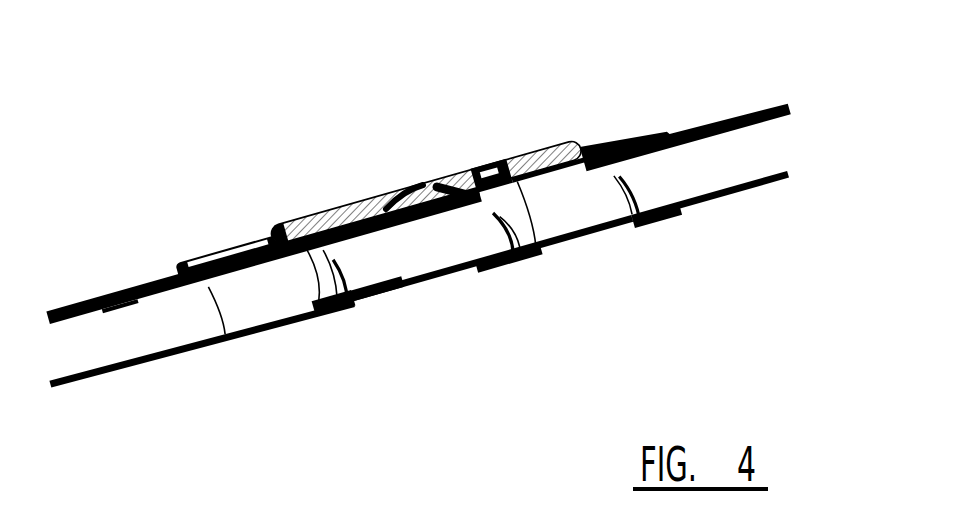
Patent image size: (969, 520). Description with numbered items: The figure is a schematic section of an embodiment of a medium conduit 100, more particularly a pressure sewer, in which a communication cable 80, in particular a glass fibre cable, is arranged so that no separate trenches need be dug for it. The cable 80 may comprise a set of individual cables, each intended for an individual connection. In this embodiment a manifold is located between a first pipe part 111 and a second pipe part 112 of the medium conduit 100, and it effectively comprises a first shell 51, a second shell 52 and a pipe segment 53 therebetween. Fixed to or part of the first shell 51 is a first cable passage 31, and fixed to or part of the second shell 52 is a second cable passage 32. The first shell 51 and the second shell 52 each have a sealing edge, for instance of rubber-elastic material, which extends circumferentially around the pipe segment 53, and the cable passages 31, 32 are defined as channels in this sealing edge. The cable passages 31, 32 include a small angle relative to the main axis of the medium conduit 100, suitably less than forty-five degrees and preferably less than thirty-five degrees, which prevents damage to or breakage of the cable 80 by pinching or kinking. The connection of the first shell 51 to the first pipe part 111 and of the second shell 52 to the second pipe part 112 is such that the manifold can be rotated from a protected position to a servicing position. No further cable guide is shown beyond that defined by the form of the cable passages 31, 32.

The medium conduit 100 is at (190, 114).
The first cable passage 31 is at (392, 202).
The second cable passage 32 is at (460, 177).
The first shell 51 is at (303, 320).
The second shell 52 is at (633, 223).
The pipe segment 53 is at (440, 272).
The communication cable 80 is at (173, 292).
The first pipe part 111 is at (127, 338).
The second pipe part 112 is at (733, 175).